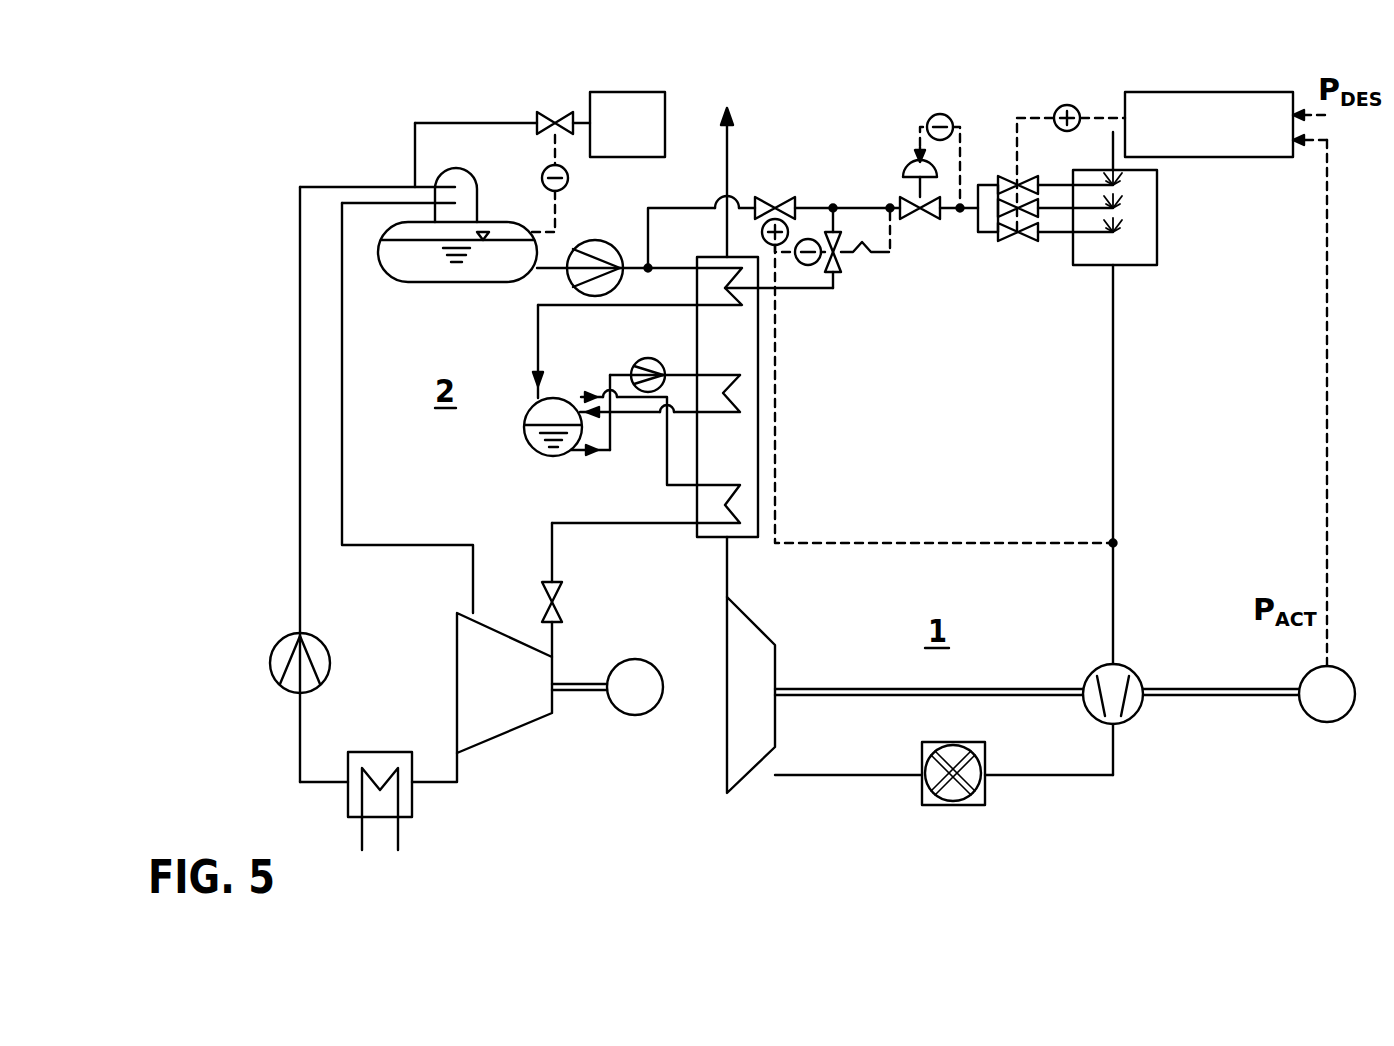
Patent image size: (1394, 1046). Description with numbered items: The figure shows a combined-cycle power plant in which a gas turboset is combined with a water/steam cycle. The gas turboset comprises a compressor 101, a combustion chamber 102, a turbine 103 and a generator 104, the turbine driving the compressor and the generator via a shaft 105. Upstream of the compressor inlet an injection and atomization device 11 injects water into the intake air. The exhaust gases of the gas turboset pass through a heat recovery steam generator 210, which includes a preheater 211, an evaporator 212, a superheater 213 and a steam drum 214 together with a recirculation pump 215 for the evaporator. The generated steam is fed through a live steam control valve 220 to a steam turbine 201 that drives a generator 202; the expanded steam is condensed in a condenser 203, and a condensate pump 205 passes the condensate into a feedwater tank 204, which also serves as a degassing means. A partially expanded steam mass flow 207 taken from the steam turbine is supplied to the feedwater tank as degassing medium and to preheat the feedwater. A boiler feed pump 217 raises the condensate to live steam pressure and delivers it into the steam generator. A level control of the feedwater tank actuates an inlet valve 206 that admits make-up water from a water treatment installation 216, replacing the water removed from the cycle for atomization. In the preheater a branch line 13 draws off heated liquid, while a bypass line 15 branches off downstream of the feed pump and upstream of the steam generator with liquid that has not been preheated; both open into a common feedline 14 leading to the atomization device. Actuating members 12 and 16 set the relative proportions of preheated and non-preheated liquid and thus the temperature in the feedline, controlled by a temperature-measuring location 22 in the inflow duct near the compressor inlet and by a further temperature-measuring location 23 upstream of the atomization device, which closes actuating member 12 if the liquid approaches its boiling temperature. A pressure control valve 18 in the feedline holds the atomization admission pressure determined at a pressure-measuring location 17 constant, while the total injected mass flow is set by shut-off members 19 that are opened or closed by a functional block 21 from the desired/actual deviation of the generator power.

The injection and atomization device 11 is at (1153, 253).
The actuating member 12 is at (842, 270).
The branch line 13 is at (810, 290).
The feedline 14 is at (818, 208).
The bypass line 15 is at (683, 208).
The actuating member 16 is at (764, 198).
The pressure-measuring location 17 is at (962, 213).
The pressure control valve 18 is at (908, 218).
The shut-off members 19 is at (1025, 240).
The functional block 21 is at (1203, 157).
The temperature-measuring location 22 is at (1116, 543).
The temperature-measuring location 23 is at (890, 208).
The compressor 101 is at (1125, 718).
The combustion chamber 102 is at (983, 782).
The turbine 103 is at (750, 765).
The generator 104 is at (1323, 722).
The shaft 105 is at (1002, 688).
The steam turbine 201 is at (535, 717).
The generator 202 is at (643, 715).
The condenser 203 is at (412, 798).
The feedwater tank 204 is at (432, 282).
The condensate pump 205 is at (270, 658).
The inlet valve 206 is at (551, 112).
The partially expanded steam mass flow 207 is at (342, 475).
The heat recovery steam generator 210 is at (758, 463).
The preheater 211 is at (743, 307).
The evaporator 212 is at (743, 392).
The superheater 213 is at (743, 492).
The steam drum 214 is at (555, 456).
The recirculation pump 215 is at (650, 358).
The water treatment installation 216 is at (655, 143).
The boiler feed pump 217 is at (596, 240).
The live steam control valve 220 is at (558, 597).